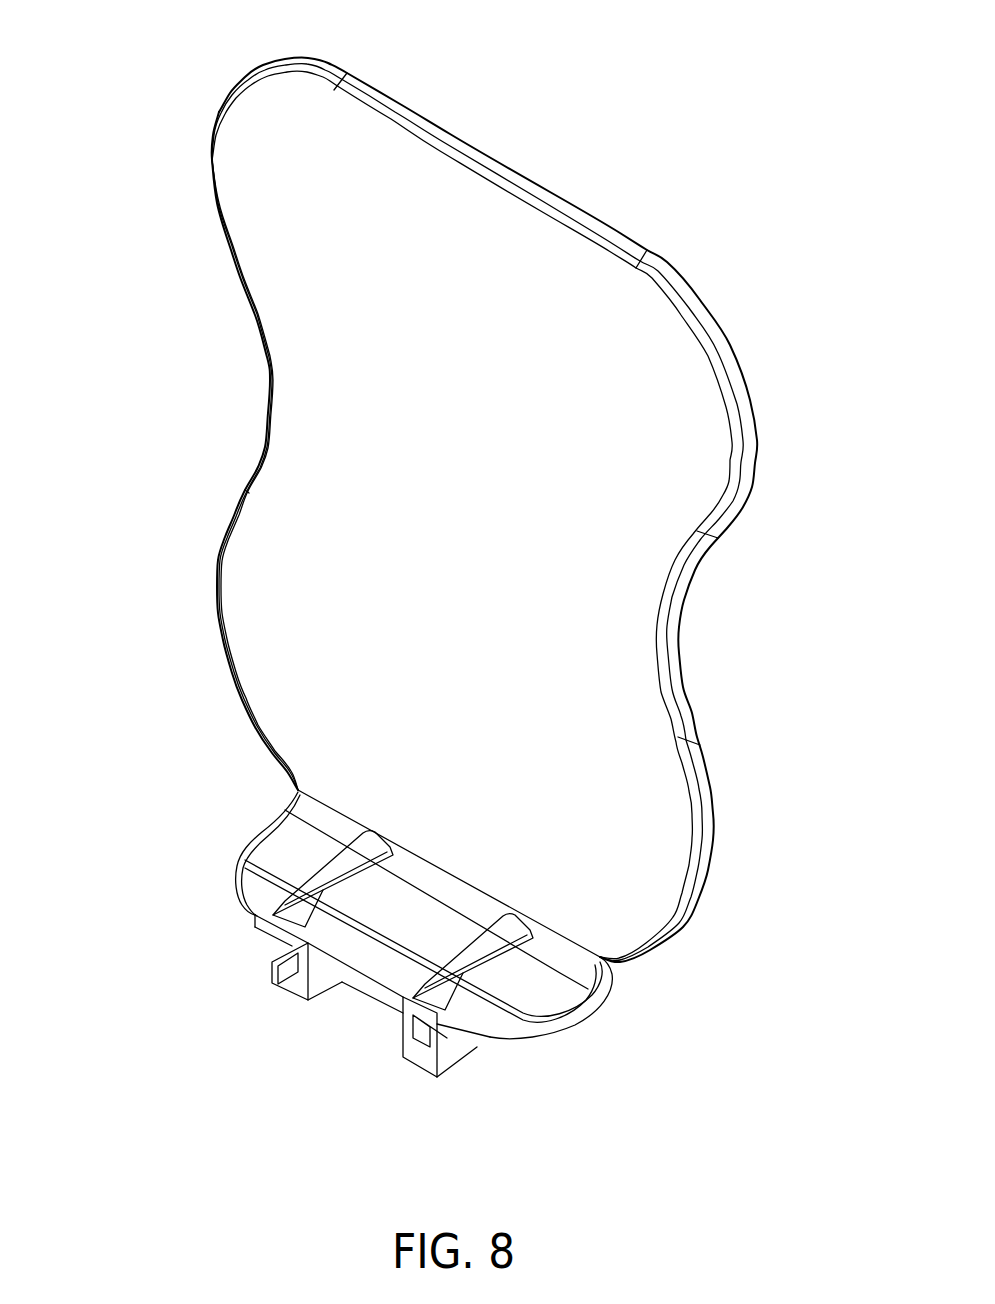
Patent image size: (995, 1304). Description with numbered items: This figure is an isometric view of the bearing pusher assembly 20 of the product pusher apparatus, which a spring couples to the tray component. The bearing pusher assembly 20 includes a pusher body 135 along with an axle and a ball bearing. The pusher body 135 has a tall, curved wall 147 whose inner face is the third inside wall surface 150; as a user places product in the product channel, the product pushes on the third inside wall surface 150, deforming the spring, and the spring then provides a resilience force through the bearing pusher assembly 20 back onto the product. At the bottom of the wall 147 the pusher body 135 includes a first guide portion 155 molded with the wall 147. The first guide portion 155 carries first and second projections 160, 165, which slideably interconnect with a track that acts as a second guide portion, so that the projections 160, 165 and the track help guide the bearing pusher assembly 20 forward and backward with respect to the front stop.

The bearing pusher assembly 20 is at (165, 454).
The pusher body 135 is at (620, 972).
The wall 147 is at (242, 270).
The third inside wall surface 150 is at (450, 242).
The first guide portion 155 is at (265, 834).
The first projection 160 is at (272, 983).
The second projection 165 is at (445, 1072).